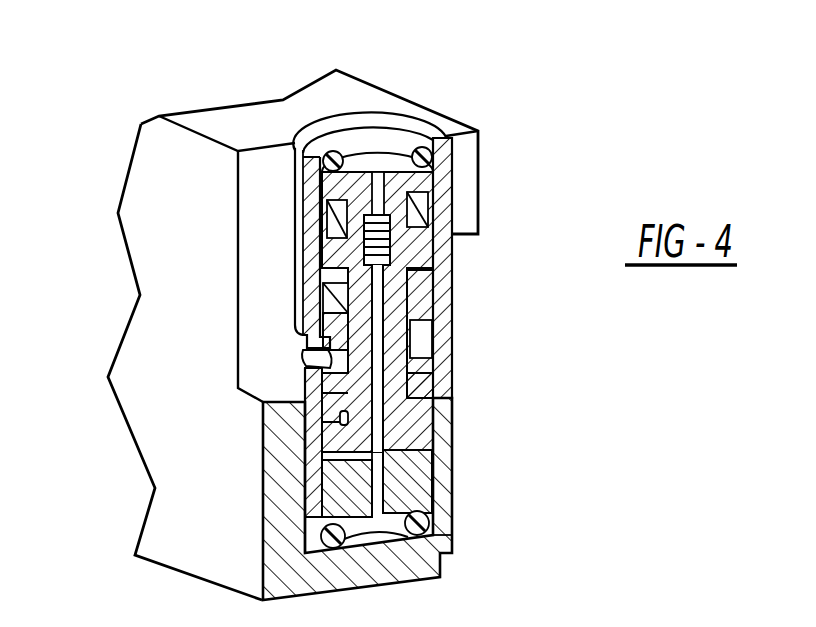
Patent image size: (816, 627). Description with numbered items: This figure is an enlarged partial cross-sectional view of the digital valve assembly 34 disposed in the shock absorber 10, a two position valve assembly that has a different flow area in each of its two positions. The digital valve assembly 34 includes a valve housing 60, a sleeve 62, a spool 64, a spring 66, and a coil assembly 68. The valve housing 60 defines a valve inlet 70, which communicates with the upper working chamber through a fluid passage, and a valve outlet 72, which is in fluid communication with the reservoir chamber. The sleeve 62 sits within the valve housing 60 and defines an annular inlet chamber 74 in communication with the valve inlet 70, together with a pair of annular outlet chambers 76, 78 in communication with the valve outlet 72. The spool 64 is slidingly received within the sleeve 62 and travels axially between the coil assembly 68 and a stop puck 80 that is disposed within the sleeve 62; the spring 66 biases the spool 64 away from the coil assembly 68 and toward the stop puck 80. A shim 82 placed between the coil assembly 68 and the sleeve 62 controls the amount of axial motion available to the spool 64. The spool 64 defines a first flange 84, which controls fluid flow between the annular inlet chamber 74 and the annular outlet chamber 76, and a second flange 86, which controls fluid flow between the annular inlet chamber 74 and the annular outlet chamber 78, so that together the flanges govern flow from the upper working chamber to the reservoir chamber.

The vehicle component 10 is at (735, 626).
The digital valve assembly 34 is at (527, 67).
The valve housing 60 is at (157, 198).
The sleeve 62 is at (433, 428).
The spool 64 is at (400, 275).
The spring 66 is at (417, 210).
The coil assembly 68 is at (358, 190).
The valve inlet 70 is at (253, 260).
The valve outlet 72 is at (445, 562).
The annular inlet chamber 74 is at (297, 353).
The annular outlet chamber 76 is at (400, 287).
The annular outlet chamber 78 is at (427, 398).
The stop puck 80 is at (342, 492).
The shim 82 is at (425, 248).
The first flange 84 is at (340, 303).
The second flange 86 is at (347, 367).